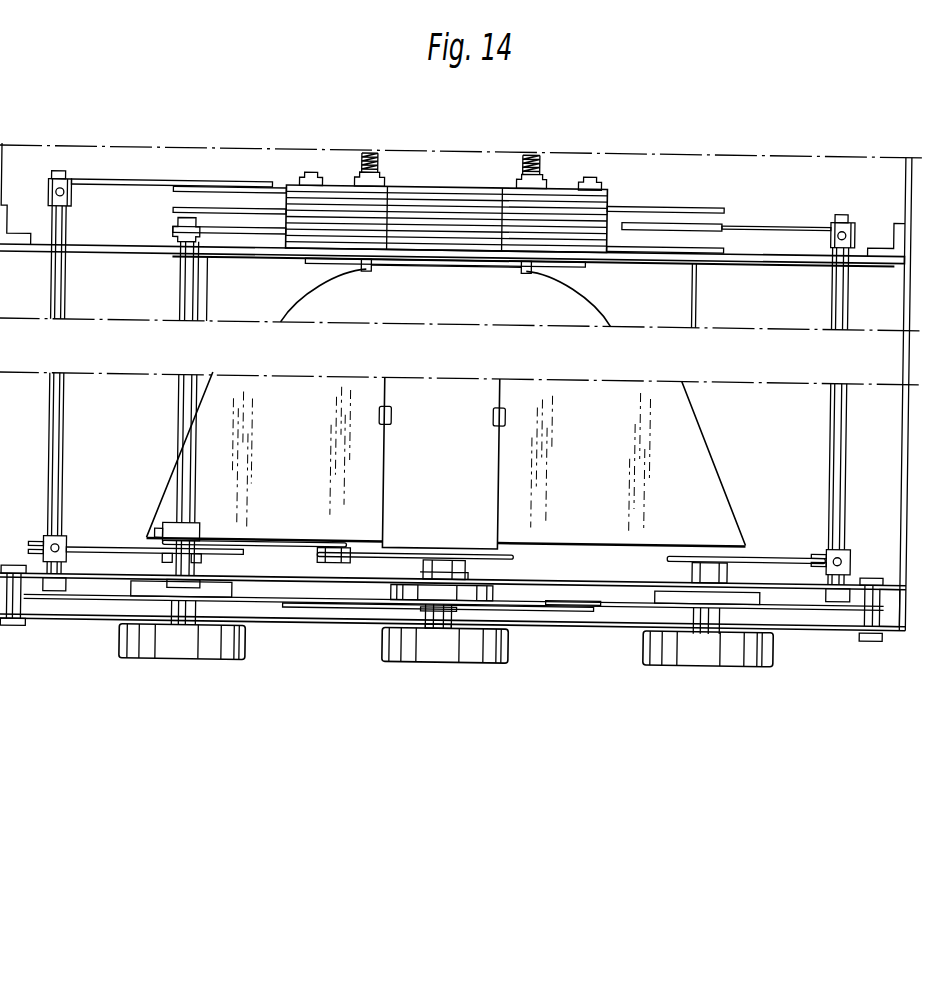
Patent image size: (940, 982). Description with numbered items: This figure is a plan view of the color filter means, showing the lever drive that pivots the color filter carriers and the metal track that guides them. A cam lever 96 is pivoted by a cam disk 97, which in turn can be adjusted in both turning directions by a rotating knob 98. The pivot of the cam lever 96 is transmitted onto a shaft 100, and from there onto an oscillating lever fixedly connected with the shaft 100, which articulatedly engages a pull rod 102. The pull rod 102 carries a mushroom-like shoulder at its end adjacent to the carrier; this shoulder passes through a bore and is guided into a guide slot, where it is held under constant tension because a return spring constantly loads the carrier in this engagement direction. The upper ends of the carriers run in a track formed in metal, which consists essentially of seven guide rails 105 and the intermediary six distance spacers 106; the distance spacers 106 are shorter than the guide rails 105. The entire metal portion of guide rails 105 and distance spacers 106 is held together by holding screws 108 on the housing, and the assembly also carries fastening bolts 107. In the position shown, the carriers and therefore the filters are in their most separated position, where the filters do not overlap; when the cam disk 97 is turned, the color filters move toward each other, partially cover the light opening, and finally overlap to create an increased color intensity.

The cam lever 96 is at (296, 545).
The cam disk 97 is at (518, 549).
The rotating knob 98 is at (507, 643).
The shaft 100 is at (189, 422).
The pull rod 102 is at (252, 227).
The guide rails 105 is at (609, 181).
The distance spacers 106 is at (609, 188).
The bolt 107 is at (310, 168).
The holding screws 108 is at (370, 147).